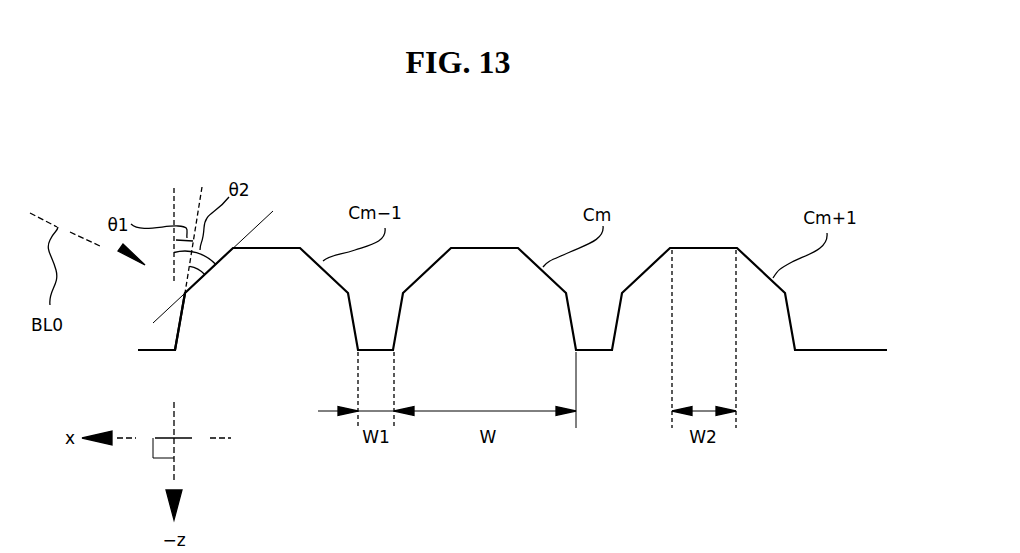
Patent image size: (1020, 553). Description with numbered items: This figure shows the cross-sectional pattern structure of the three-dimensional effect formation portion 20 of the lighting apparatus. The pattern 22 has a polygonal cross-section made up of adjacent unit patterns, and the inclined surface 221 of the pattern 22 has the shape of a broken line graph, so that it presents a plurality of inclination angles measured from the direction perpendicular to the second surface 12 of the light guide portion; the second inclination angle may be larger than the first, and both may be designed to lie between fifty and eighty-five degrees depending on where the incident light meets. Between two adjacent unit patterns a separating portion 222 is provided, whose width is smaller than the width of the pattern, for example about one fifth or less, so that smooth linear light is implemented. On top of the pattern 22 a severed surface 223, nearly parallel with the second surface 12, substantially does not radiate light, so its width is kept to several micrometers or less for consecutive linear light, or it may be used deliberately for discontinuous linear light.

The three-dimensional effect formation portion 20 is at (763, 192).
The pattern 22 is at (453, 247).
The inclined surface 221 is at (190, 262).
The separating portion 222 is at (382, 350).
The severed surface 223 is at (703, 247).
The second surface 12 is at (840, 351).